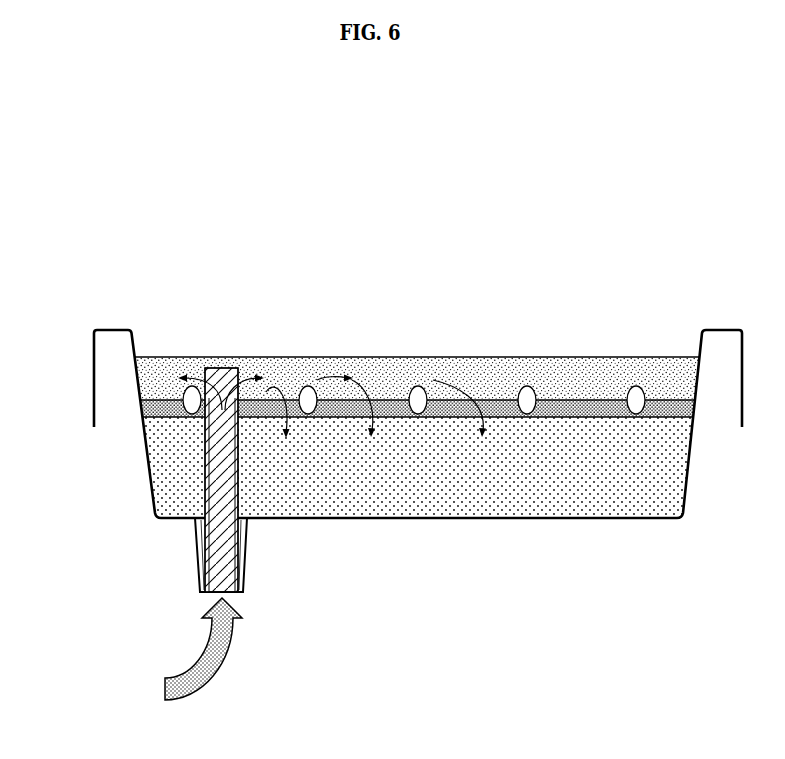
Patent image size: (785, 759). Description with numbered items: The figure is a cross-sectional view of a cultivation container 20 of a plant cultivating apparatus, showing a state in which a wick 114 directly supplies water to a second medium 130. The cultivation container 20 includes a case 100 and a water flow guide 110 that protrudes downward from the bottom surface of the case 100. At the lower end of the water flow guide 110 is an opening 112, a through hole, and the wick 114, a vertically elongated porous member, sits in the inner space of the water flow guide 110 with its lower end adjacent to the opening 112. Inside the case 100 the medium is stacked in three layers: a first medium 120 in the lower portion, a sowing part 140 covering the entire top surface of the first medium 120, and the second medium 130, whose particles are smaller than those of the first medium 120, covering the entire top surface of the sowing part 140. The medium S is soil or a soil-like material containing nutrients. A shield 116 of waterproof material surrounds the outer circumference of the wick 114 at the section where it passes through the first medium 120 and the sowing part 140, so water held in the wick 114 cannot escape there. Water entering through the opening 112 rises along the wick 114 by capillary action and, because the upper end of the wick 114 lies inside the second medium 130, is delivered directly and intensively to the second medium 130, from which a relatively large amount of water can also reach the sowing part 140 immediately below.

The cultivation container 20 is at (152, 236).
The case 100 is at (94, 364).
The water flow guide 110 is at (237, 597).
The opening 112 is at (223, 586).
The wick 114 is at (234, 558).
The shield 116 is at (241, 530).
The first medium 120 is at (458, 500).
The second medium 130 is at (548, 400).
The sowing part 140 is at (558, 408).
The sand S is at (420, 395).